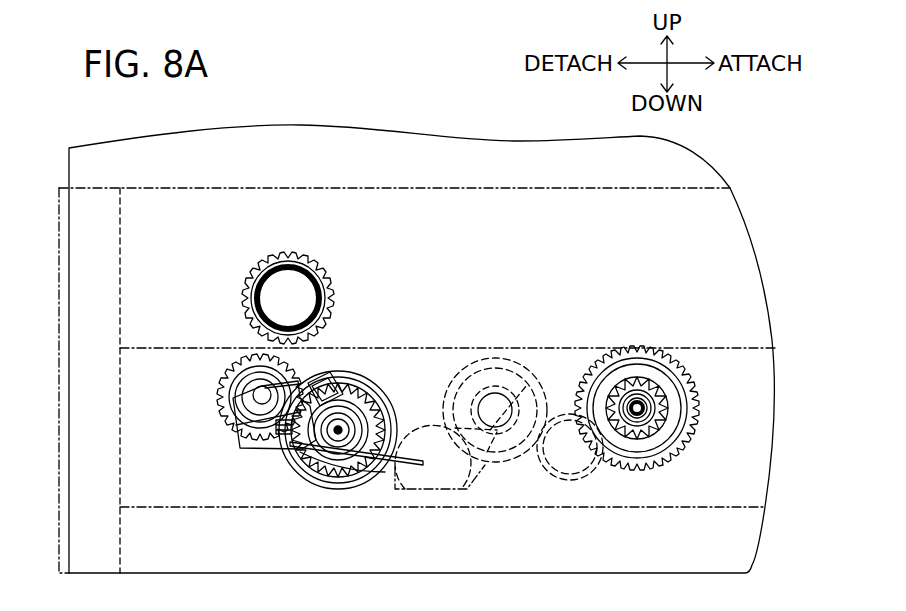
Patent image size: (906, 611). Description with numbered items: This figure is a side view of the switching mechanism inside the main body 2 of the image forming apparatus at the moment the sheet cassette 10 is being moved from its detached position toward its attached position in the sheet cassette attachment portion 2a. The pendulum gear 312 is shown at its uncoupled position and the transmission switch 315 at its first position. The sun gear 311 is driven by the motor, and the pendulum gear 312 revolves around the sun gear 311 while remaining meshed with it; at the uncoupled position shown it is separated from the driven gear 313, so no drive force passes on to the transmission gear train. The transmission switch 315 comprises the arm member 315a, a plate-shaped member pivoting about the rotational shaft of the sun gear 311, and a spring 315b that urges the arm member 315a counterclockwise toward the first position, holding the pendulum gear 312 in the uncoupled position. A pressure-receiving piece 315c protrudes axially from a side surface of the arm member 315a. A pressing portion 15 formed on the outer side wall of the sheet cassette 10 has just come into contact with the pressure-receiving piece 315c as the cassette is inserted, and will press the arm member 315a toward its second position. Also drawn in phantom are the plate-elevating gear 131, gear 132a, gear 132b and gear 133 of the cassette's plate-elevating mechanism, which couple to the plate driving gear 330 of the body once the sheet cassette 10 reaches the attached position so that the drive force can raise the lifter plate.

The main body 2 is at (69, 168).
The sheet cassette attachment portion 2a is at (612, 267).
The sheet cassette 10 is at (58, 298).
The pressing portion 15 is at (279, 447).
The plate-elevating gear 131 is at (540, 490).
The gear 132a is at (480, 365).
The gear 132b is at (531, 366).
The gear 133 is at (427, 432).
The sun gear 311 is at (370, 388).
The pendulum gear 312 is at (222, 375).
The driven gear 313 is at (334, 290).
The transmission switch 315 is at (245, 441).
The arm member 315a is at (265, 455).
The spring 315b is at (383, 472).
The pressure-receiving piece 315c is at (323, 384).
The plate driving gear 330 is at (655, 388).